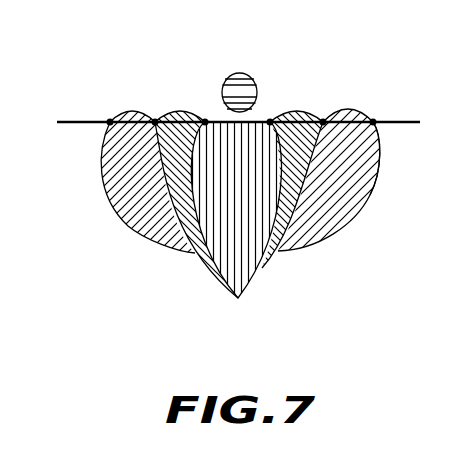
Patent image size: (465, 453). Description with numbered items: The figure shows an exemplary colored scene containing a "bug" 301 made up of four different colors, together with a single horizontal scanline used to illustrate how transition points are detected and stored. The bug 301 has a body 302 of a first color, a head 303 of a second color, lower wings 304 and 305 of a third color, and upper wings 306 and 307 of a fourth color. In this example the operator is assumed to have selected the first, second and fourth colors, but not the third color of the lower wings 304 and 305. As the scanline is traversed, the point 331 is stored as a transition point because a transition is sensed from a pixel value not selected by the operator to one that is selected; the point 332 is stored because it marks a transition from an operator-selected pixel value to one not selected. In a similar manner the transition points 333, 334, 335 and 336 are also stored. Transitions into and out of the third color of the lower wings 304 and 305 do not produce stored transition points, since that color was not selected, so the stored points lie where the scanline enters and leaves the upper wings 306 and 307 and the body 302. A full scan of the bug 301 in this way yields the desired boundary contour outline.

The bug 301 is at (376, 191).
The body 302 is at (233, 266).
The head 303 is at (244, 75).
The lower wing 304 is at (273, 254).
The lower wing 305 is at (195, 240).
The upper wing 306 is at (330, 217).
The upper wing 307 is at (147, 203).
The transition point 331 is at (110, 122).
The transition point 332 is at (156, 122).
The transition point 333 is at (205, 122).
The transition point 334 is at (270, 122).
The transition point 335 is at (323, 122).
The transition point 336 is at (373, 122).